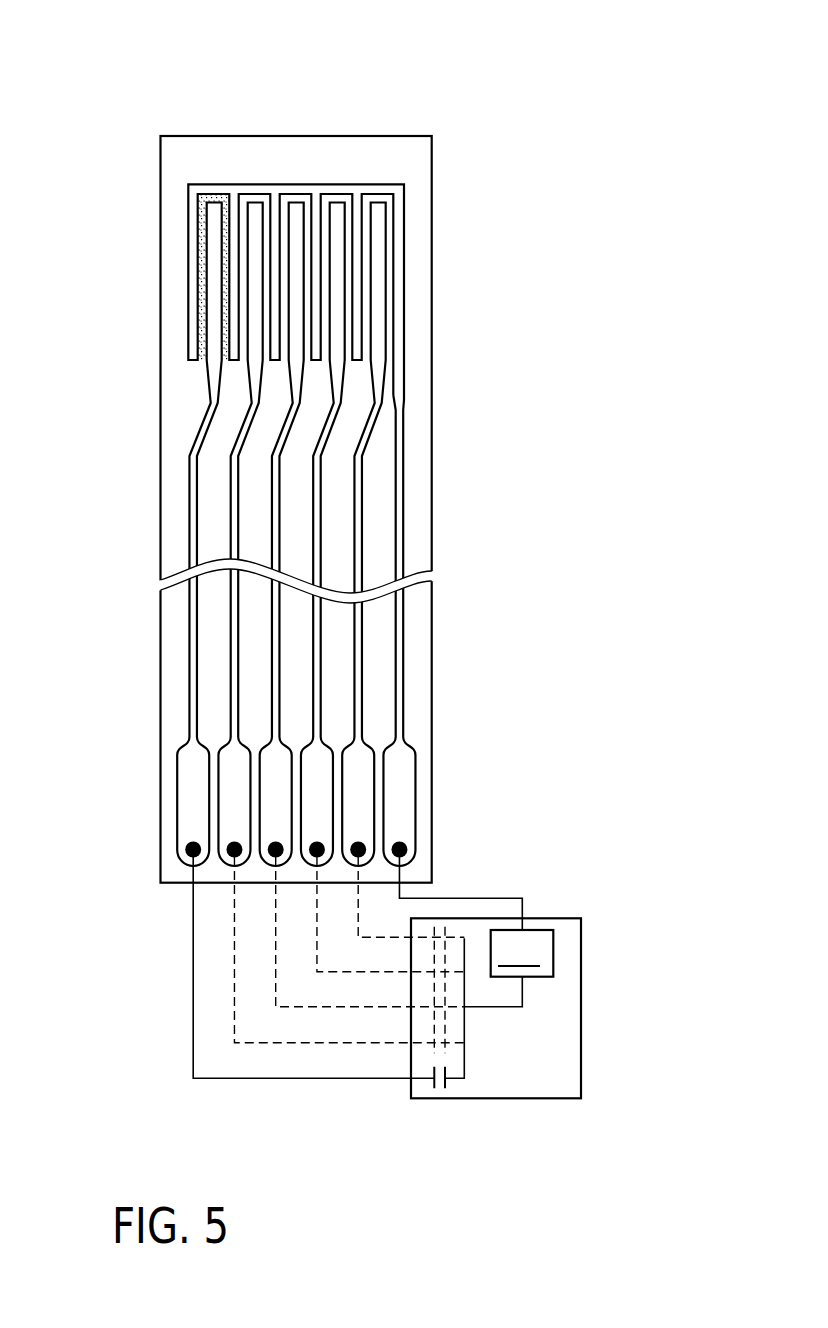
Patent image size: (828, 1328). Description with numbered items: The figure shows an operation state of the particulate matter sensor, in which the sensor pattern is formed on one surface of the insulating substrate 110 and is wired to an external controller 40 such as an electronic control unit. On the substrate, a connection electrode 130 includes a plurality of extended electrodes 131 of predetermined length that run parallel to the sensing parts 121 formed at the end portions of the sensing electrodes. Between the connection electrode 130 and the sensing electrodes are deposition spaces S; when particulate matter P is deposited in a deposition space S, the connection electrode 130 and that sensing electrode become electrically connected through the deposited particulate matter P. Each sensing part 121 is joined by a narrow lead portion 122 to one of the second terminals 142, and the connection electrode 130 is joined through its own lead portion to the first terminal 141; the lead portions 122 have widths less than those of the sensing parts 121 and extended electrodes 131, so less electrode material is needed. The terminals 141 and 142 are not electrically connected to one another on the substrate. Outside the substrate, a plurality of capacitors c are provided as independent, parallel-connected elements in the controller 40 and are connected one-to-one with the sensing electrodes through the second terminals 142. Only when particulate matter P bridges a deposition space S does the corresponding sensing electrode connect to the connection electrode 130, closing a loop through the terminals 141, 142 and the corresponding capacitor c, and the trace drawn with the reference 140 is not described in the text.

The insulating substrate 110 is at (392, 136).
The connection electrode 130 is at (405, 302).
The extended electrode 131 is at (195, 260).
The sensing part 121 is at (215, 318).
The lead portion 122 is at (193, 488).
The wiring line 140 is at (363, 493).
The first terminal 141 is at (402, 803).
The second terminal 142 is at (193, 820).
The controller 40 is at (581, 1007).
The deposition space S is at (297, 200).
The particulate matter P is at (305, 211).
The capacitor c is at (442, 1090).